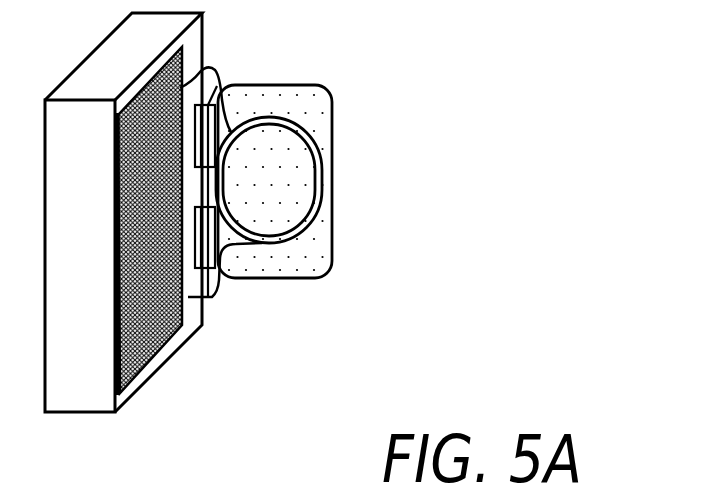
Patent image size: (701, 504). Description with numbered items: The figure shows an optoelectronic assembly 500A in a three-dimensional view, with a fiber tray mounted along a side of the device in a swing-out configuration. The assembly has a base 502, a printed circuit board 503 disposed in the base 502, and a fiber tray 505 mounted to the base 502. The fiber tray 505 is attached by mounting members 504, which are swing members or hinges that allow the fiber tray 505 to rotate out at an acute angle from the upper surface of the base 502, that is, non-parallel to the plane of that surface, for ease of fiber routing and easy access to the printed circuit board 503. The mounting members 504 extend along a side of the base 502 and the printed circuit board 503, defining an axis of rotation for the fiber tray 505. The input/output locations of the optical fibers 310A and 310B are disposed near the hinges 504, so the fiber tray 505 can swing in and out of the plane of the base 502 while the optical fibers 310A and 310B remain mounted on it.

The optoelectronic assembly 500A is at (477, 55).
The base 502 is at (83, 393).
The printed circuit board 503 is at (143, 333).
The mounting members 504 is at (196, 137).
The fiber tray 505 is at (292, 102).
The optical fiber 310A is at (215, 71).
The optical fiber 310B is at (209, 298).